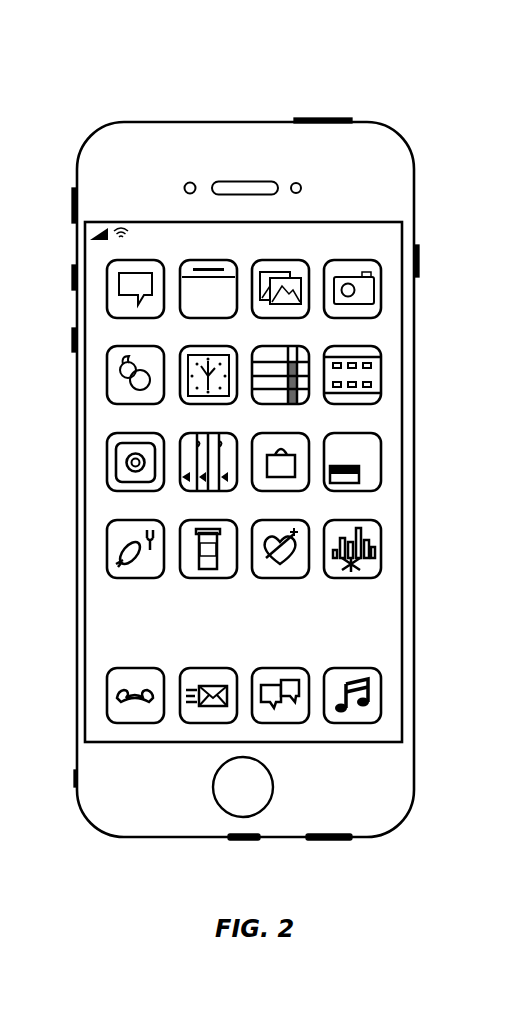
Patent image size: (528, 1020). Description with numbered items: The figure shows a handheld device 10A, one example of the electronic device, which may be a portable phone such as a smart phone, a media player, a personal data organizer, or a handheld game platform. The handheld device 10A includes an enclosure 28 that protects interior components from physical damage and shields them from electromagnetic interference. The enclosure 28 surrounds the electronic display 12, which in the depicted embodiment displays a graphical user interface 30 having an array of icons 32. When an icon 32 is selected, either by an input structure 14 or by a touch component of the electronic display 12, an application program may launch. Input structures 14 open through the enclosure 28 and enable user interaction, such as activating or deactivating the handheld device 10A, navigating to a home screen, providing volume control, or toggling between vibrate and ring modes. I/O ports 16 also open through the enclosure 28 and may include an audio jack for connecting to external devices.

The handheld device 10A is at (68, 112).
The electronic display 12 is at (404, 515).
The input structure 14 is at (322, 119).
The I/O port 16 is at (157, 838).
The enclosure 28 is at (415, 187).
The graphical user interface 30 is at (387, 422).
The icon 32 is at (280, 567).